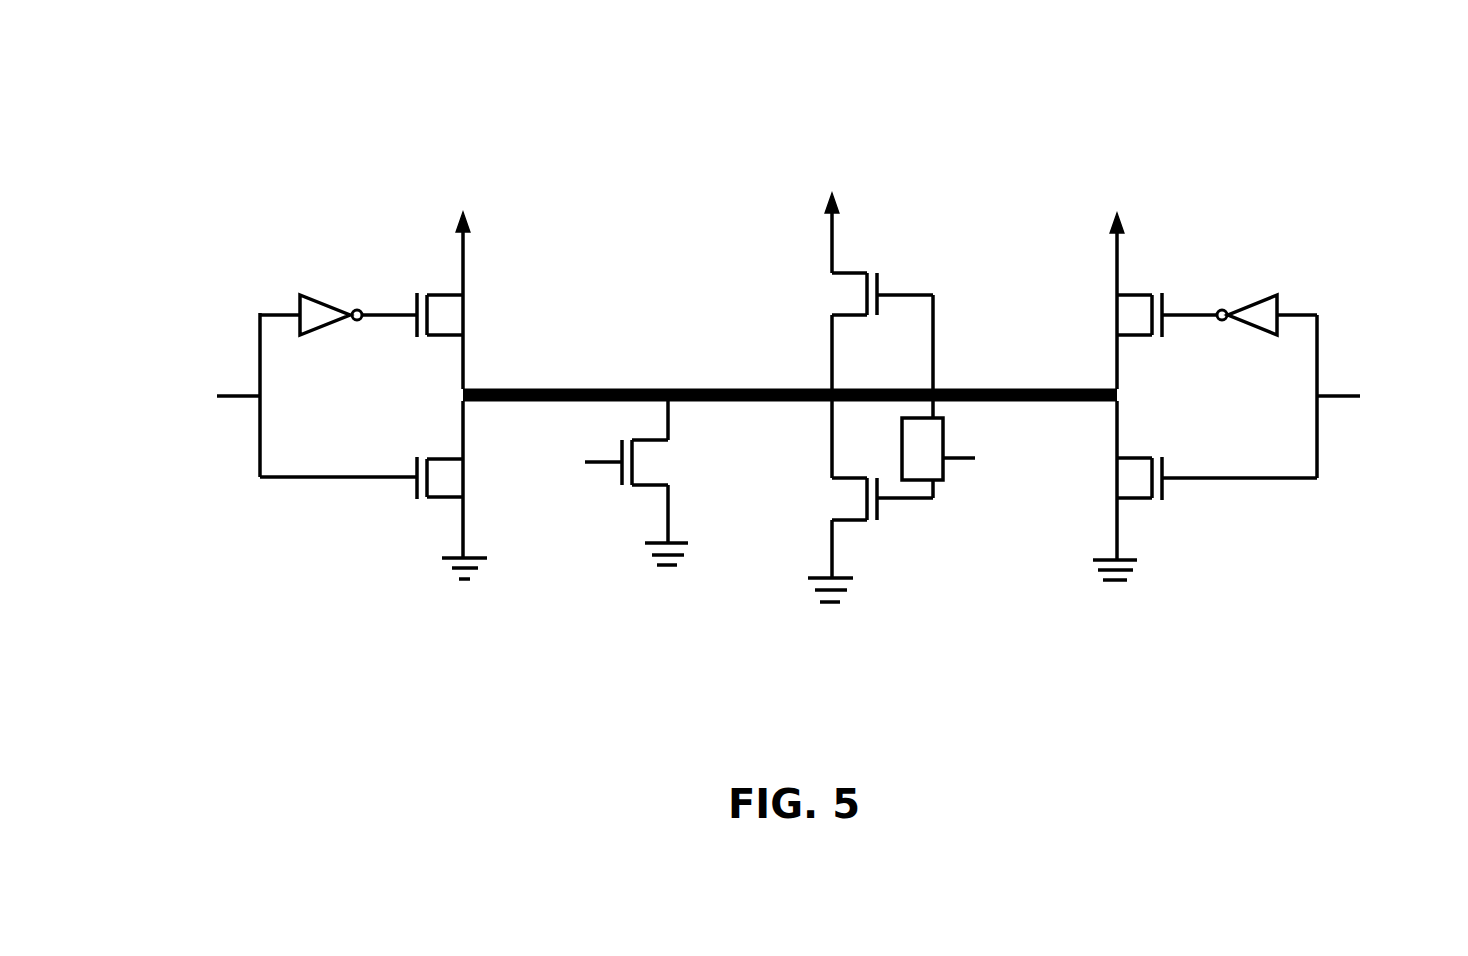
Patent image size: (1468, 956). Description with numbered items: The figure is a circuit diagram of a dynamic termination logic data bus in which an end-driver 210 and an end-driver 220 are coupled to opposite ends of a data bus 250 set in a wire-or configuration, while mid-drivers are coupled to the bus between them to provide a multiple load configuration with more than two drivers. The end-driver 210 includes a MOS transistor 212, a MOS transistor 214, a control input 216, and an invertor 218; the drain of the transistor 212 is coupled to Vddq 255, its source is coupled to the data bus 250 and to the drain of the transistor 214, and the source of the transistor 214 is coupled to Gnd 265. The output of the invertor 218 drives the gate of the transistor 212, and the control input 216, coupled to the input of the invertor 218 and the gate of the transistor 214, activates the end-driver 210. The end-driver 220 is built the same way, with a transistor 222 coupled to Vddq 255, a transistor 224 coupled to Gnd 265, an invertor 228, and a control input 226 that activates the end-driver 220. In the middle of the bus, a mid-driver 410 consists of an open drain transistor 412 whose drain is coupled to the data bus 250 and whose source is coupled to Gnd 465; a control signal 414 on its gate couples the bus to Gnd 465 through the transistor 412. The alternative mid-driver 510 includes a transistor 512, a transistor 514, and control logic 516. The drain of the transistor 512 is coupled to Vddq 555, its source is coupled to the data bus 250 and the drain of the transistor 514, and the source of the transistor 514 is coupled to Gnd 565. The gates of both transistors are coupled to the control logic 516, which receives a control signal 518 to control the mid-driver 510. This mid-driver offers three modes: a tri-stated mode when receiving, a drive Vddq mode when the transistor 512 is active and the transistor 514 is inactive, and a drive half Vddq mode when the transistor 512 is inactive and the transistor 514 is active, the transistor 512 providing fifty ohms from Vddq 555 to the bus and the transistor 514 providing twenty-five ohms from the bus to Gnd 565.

The end-driver 210 is at (296, 395).
The MOS transistor 212 is at (433, 273).
The MOS transistor 214 is at (433, 517).
The control input 216 is at (248, 383).
The invertor 218 is at (292, 295).
The end-driver 220 is at (1288, 396).
The MOS transistor 222 is at (1147, 275).
The MOS transistor 224 is at (1145, 518).
The control input 226 is at (1338, 385).
The invertor 228 is at (1288, 295).
The data bus 250 is at (505, 387).
The Vddq 255 is at (463, 192).
The Gnd 265 is at (453, 602).
The mid-driver 410 is at (643, 519).
The open drain transistor 412 is at (638, 498).
The control signal 414 is at (598, 478).
The Gnd 465 is at (658, 585).
The mid-driver 510 is at (875, 394).
The transistor 512 is at (830, 295).
The transistor 514 is at (830, 498).
The control logic 516 is at (943, 498).
The control signal 518 is at (963, 448).
The Vddq 555 is at (832, 172).
The Gnd 565 is at (820, 622).